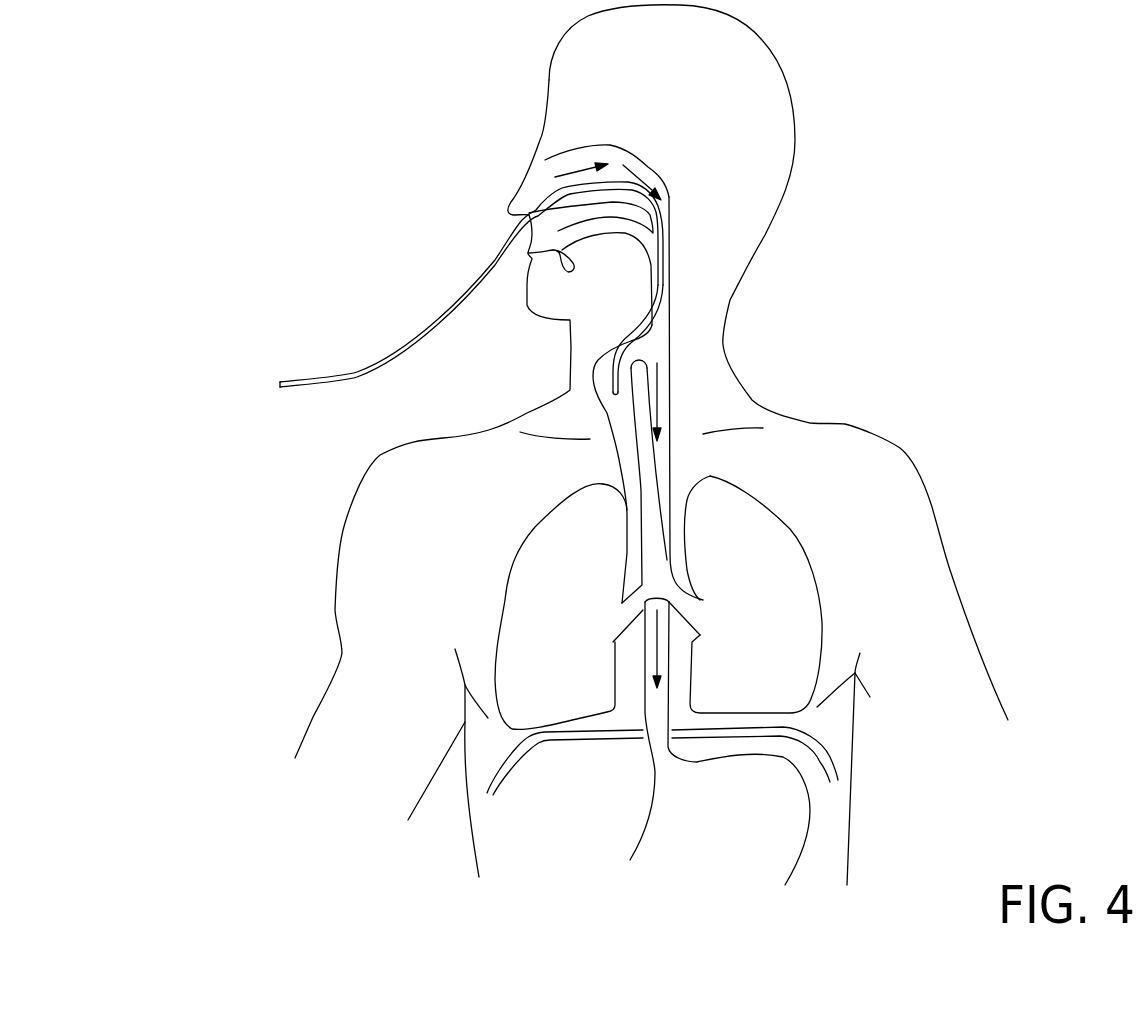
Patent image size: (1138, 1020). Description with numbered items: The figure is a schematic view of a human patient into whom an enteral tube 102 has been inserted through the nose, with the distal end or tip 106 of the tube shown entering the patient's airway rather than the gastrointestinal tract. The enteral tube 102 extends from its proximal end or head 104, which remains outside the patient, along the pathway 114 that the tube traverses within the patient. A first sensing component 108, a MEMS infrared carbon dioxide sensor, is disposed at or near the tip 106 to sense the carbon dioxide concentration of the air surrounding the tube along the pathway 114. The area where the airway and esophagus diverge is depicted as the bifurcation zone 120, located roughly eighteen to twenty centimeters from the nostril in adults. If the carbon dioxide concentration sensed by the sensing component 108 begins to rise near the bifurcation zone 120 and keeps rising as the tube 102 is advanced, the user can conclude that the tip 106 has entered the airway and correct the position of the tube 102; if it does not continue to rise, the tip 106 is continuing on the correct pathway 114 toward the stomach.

The enteral tube 102 is at (437, 322).
The proximal end or head 104 is at (264, 372).
The distal end or tip 106 is at (598, 403).
The first sensing component 108 is at (620, 393).
The pathway 114 is at (645, 168).
The bifurcation zone 120 is at (690, 334).